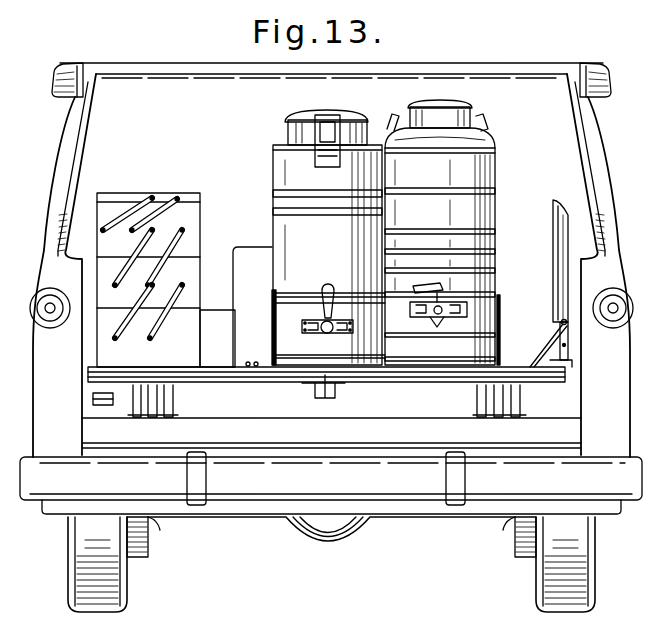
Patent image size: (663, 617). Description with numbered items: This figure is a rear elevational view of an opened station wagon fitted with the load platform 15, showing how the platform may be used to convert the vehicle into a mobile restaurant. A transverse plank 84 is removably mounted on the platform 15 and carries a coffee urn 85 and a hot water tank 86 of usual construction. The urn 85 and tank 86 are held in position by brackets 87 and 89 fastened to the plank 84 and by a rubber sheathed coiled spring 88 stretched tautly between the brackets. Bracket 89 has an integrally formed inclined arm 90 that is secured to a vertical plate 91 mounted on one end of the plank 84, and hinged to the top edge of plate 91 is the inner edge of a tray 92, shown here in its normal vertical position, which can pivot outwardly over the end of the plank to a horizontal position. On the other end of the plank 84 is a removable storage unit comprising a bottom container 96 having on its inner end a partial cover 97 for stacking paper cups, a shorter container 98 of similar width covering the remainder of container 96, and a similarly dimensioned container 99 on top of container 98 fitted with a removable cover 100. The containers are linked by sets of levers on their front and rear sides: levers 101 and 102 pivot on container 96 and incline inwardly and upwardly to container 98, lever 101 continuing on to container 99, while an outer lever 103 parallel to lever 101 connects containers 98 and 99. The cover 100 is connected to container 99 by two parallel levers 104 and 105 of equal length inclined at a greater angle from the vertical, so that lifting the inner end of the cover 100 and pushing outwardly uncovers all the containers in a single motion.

The platform 15 is at (272, 380).
The transverse plank 84 is at (227, 372).
The coffee urn 85 is at (262, 178).
The hot water tank 86 is at (506, 178).
The bracket 87 is at (271, 336).
The rubber sheathed coiled spring 88 is at (348, 296).
The bracket 89 is at (500, 326).
The inclined arm 90 is at (557, 328).
The vertical plate 91 is at (569, 358).
The tray 92 is at (552, 250).
The bottom container 96 is at (200, 343).
The partial cover 97 is at (220, 308).
The shorter container 98 is at (200, 264).
The container 99 is at (195, 223).
The removable cover 100 is at (192, 195).
The lever 101 is at (148, 278).
The inner lever 102 is at (176, 290).
The outer lever 103 is at (137, 250).
The lever 104 is at (122, 212).
The lever 105 is at (160, 198).